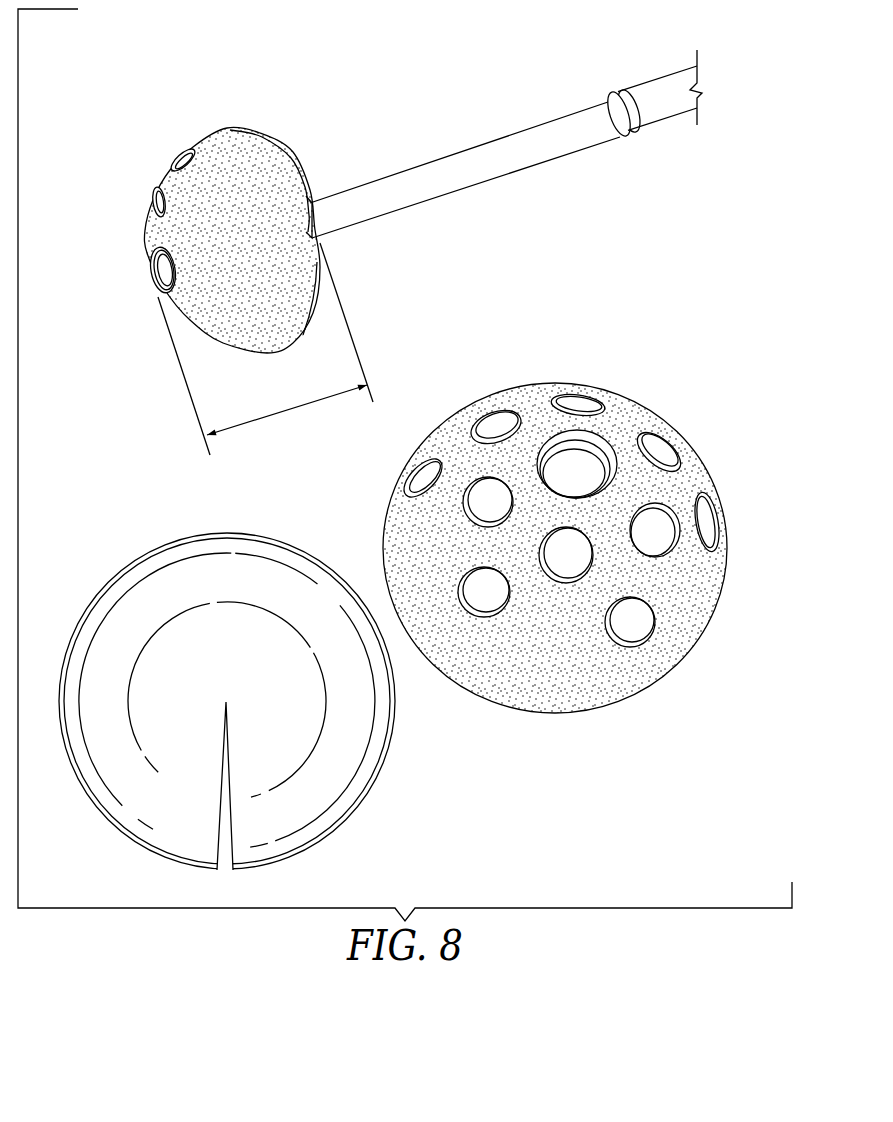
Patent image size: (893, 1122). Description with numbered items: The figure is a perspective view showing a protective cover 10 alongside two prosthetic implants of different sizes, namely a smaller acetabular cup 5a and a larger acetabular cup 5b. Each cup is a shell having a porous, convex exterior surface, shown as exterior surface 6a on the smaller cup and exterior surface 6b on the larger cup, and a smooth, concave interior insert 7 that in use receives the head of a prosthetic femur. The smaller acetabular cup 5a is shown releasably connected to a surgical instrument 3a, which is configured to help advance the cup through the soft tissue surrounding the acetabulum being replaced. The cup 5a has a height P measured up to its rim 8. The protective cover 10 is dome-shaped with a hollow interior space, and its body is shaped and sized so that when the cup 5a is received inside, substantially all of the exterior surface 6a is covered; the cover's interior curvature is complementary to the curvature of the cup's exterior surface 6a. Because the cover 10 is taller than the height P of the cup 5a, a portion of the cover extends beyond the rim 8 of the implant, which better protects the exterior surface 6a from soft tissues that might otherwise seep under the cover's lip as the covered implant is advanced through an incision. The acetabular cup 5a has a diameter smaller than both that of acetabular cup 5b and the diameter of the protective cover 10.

The surgical instrument 3a is at (445, 193).
The acetabular cup 5a is at (210, 228).
The exterior surface 6a is at (210, 158).
The insert 7 is at (268, 143).
The rim 8 is at (303, 201).
The height of the prosthetic implant P is at (287, 408).
The acetabular cup 5b is at (579, 562).
The exterior surface 6b is at (672, 483).
The protective cover 10 is at (85, 565).